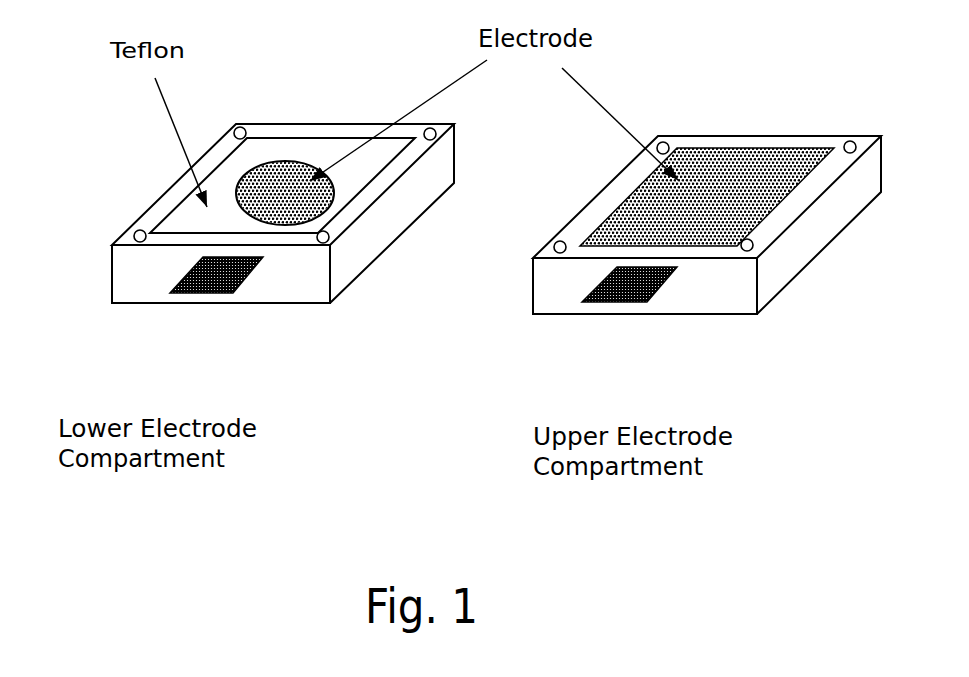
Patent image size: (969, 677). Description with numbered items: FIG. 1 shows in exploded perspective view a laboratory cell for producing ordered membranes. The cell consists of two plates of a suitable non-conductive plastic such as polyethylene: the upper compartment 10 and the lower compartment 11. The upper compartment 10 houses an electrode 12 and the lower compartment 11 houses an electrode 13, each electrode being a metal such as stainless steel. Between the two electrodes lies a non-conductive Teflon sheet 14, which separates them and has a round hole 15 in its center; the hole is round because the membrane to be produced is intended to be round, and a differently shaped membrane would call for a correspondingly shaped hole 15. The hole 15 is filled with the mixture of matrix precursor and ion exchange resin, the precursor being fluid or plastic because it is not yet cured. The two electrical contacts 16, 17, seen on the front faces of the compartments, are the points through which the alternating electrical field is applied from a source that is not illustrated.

The upper compartment 10 is at (808, 238).
The lower compartment 11 is at (128, 273).
The electrode 12 is at (760, 147).
The electrode 13 is at (297, 174).
The Teflon insulating plate 14 is at (326, 160).
The round hole 15 is at (257, 163).
The electrical contact 16 is at (648, 302).
The electrical contact 17 is at (233, 292).